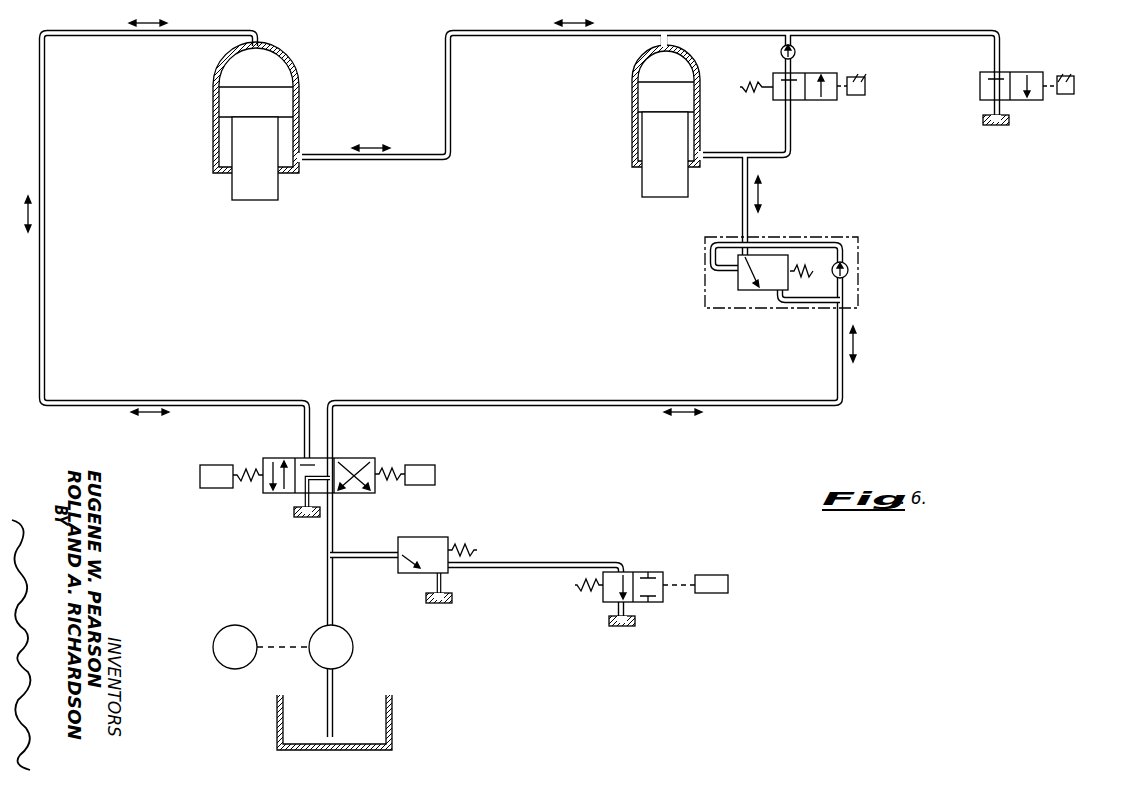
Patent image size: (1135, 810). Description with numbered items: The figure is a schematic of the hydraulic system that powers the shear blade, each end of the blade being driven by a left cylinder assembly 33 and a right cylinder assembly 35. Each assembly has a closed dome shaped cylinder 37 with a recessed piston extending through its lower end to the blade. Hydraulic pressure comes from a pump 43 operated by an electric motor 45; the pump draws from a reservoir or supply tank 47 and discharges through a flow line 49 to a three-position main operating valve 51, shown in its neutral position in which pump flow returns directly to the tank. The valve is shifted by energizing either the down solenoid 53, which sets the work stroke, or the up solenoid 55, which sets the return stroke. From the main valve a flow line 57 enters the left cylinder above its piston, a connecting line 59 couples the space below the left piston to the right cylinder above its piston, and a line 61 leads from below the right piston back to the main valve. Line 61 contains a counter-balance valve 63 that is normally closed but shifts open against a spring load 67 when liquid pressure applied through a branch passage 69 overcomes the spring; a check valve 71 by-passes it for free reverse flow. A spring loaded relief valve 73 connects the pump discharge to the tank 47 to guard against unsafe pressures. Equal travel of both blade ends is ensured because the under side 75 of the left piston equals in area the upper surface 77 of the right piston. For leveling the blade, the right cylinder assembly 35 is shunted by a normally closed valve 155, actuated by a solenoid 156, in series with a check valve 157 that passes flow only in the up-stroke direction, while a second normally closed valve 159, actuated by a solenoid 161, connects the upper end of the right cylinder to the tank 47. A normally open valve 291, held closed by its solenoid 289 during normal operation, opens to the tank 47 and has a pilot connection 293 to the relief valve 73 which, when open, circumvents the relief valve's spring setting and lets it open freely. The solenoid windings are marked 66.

The left cylinder assembly 33 is at (257, 121).
The under side of the left piston 75 is at (228, 121).
The right cylinder assembly 35 is at (648, 115).
The dome shaped cylinder 37 is at (632, 140).
The upper surface of the right piston 77 is at (655, 82).
The flow line 57 is at (157, 239).
The connecting line 59 is at (452, 128).
The line 61 is at (665, 400).
The counter-balance valve 63 is at (777, 276).
The spring load 67 is at (809, 280).
The branch passage 69 is at (783, 272).
The check valve 71 is at (849, 270).
The check valve 157 is at (796, 52).
The normally closed valve 155 is at (805, 100).
The solenoid 156 is at (862, 91).
The solenoid winding 66 is at (964, 68).
The second normally closed valve 159 is at (1028, 100).
The solenoid 161 is at (1075, 86).
The reservoir or supply tank 47 is at (393, 719).
The three-position main operating valve 51 is at (292, 455).
The down solenoid 53 is at (424, 480).
The up solenoid 55 is at (217, 481).
The flow line 49 is at (327, 585).
The spring loaded relief valve 73 is at (436, 558).
The pilot connection 293 is at (550, 562).
The normally open valve 291 is at (665, 569).
The solenoid 289 is at (722, 584).
The pump 43 is at (354, 641).
The electric motor 45 is at (218, 636).